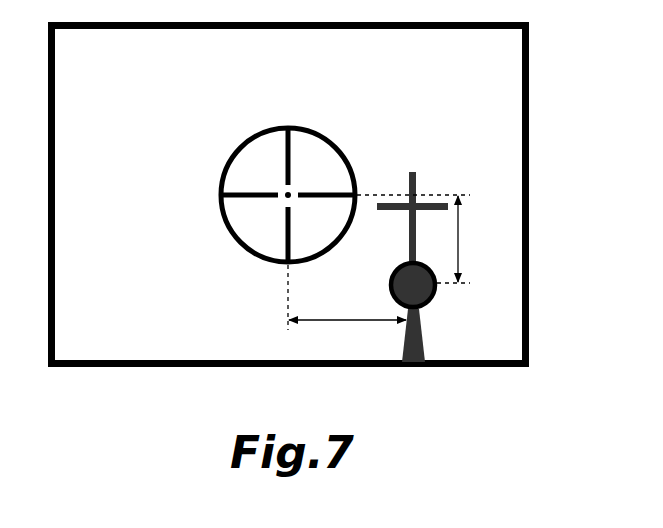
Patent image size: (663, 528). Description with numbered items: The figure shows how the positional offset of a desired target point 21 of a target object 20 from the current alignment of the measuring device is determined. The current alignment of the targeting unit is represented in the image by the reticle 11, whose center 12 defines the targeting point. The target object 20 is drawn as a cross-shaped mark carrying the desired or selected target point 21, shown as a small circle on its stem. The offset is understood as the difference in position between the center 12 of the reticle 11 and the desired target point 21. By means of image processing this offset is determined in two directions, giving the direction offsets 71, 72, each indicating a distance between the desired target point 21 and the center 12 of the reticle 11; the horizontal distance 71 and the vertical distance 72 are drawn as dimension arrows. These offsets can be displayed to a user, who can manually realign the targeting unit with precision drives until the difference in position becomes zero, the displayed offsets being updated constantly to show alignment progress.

The reticle 11 is at (262, 174).
The center of the reticle 12 is at (220, 232).
The target object 20 is at (435, 190).
The desired target point 21 is at (489, 312).
The direction offset 71 is at (357, 337).
The direction offset 72 is at (467, 236).